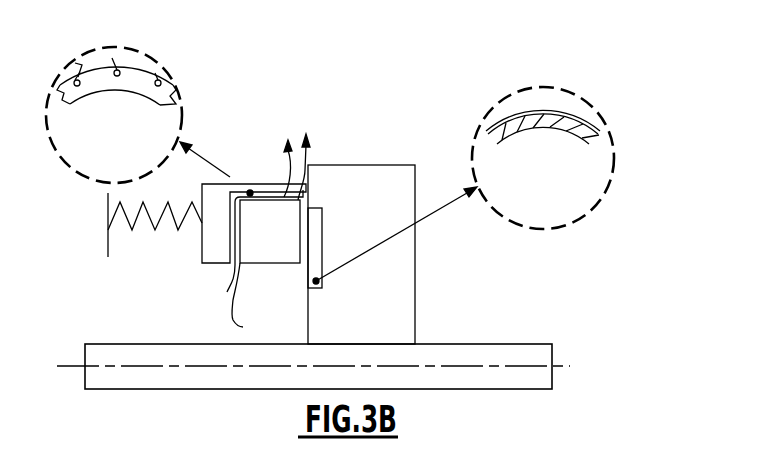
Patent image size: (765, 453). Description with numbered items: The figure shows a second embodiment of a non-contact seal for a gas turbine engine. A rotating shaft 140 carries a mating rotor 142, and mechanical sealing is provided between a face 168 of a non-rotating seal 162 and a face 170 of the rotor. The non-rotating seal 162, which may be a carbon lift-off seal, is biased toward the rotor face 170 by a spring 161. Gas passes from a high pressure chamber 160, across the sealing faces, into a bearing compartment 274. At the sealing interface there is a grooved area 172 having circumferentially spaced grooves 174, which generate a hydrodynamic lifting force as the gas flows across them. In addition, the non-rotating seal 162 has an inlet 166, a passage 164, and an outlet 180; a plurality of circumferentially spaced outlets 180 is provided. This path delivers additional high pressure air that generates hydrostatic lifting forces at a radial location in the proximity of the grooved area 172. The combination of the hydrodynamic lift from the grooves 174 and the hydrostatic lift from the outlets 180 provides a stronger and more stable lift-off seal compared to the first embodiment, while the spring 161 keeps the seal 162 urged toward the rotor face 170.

The shaft 140 is at (497, 357).
The mating rotor 142 is at (400, 262).
The high pressure chamber 160 is at (193, 330).
The spring 161 is at (153, 230).
The non-rotating seal 162 is at (250, 193).
The passage 164 is at (263, 197).
The inlet 166 is at (256, 302).
The face 168 is at (268, 297).
The face of a rotor 170 is at (301, 308).
The grooved area 172 is at (603, 104).
The grooves 174 is at (510, 122).
The outlet 180 is at (67, 80).
The bearing compartment 274 is at (368, 117).